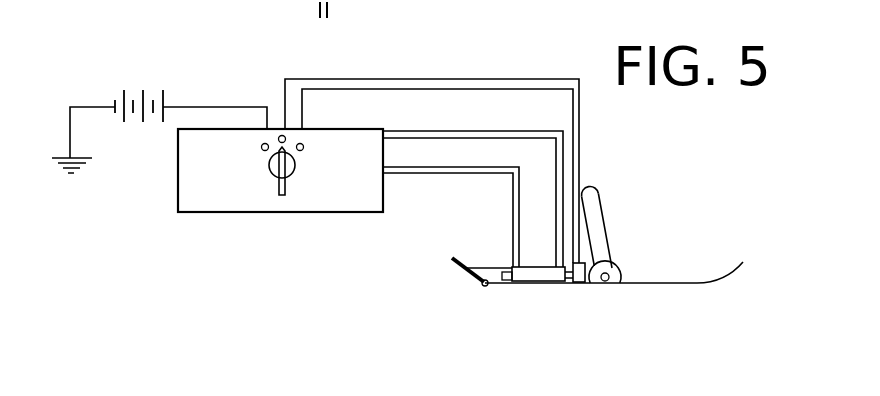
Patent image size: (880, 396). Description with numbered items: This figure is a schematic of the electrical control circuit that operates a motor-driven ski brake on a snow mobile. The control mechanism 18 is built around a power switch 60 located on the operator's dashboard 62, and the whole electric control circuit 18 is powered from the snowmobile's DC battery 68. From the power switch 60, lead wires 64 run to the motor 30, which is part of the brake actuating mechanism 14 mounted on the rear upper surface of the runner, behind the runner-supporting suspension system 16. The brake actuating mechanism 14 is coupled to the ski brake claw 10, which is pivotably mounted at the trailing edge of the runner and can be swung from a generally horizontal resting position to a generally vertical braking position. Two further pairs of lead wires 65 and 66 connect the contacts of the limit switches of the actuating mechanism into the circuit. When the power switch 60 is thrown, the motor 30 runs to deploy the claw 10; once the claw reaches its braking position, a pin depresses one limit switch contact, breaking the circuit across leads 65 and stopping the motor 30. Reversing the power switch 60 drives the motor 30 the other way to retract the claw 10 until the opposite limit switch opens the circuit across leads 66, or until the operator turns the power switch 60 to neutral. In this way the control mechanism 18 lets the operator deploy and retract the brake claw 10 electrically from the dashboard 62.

The ski brake claw 10 is at (463, 277).
The brake actuating mechanism 14 is at (536, 248).
The runner-supporting suspension system 16 is at (615, 242).
The control mechanism 18 is at (315, 157).
The motor 30 is at (577, 283).
The power switch 60 is at (288, 190).
The dashboard 62 is at (213, 200).
The lead wires 64 is at (507, 77).
The lead wires 65 is at (462, 168).
The lead wires 66 is at (493, 137).
The DC battery 68 is at (125, 118).